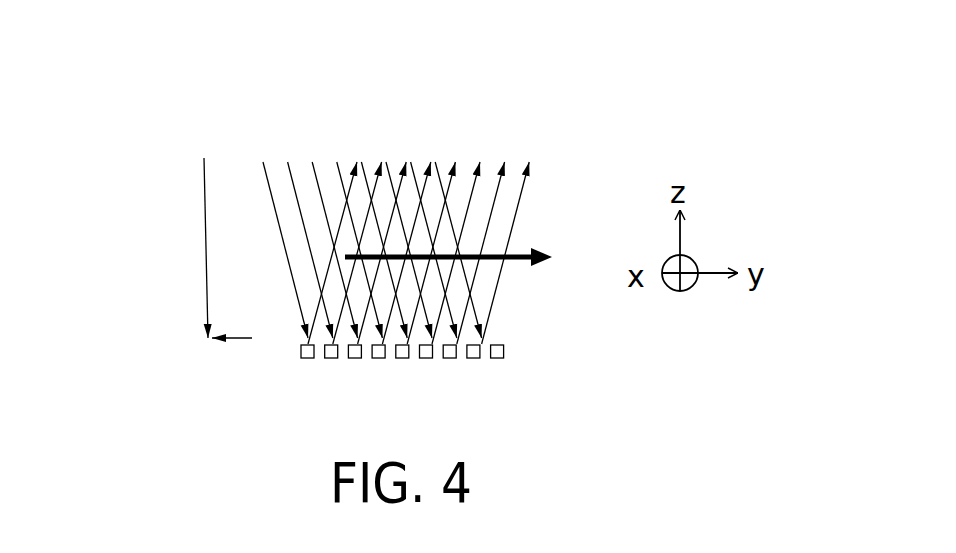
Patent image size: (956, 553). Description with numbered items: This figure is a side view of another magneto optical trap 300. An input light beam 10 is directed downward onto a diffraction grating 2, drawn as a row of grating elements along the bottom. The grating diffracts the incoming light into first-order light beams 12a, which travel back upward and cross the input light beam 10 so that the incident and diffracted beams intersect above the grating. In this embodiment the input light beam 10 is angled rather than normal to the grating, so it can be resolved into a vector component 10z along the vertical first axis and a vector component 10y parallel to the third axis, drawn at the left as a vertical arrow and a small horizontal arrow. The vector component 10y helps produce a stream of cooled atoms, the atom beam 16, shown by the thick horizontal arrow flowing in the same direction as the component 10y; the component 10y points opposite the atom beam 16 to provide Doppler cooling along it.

The input light beam 10 is at (290, 173).
The vector component of input light beam along the first axis 10z is at (200, 178).
The vector component 10y is at (223, 340).
The first-order light beams 12a is at (523, 198).
The atom beam 16 is at (513, 262).
The diffraction grating 2 is at (447, 345).
The magneto optical trap 300 is at (517, 122).